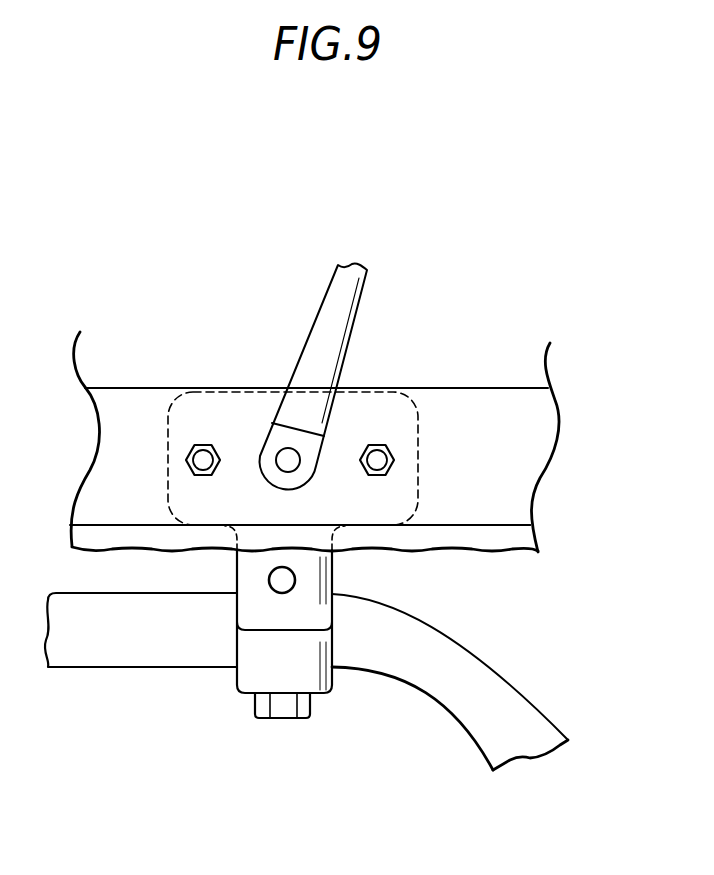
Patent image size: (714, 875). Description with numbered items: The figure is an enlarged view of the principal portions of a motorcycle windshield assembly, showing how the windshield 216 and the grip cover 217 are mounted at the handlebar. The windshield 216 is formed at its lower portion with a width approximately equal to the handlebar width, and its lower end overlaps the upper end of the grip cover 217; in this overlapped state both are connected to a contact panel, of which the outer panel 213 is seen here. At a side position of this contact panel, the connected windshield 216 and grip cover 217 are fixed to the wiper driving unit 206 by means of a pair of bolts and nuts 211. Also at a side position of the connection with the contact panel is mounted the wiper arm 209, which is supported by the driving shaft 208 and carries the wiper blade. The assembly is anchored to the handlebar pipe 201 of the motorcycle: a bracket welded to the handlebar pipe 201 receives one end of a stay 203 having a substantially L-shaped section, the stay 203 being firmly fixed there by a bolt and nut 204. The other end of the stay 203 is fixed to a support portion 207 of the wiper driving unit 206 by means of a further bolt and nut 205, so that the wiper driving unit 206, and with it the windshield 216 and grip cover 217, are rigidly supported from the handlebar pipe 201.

The handlebar pipe 201 is at (127, 642).
The stay 203 is at (312, 667).
The bolt and nut 204 is at (280, 719).
The bolt and nut 205 is at (283, 580).
The wiper driving unit 206 is at (227, 413).
The support portion 207 is at (313, 608).
The driving shaft 208 is at (288, 457).
The wiper arm 209 is at (350, 285).
The bolts and nuts 211 is at (203, 457).
The outer panel 213 is at (475, 415).
The windshield 216 is at (545, 362).
The grip cover 217 is at (490, 536).